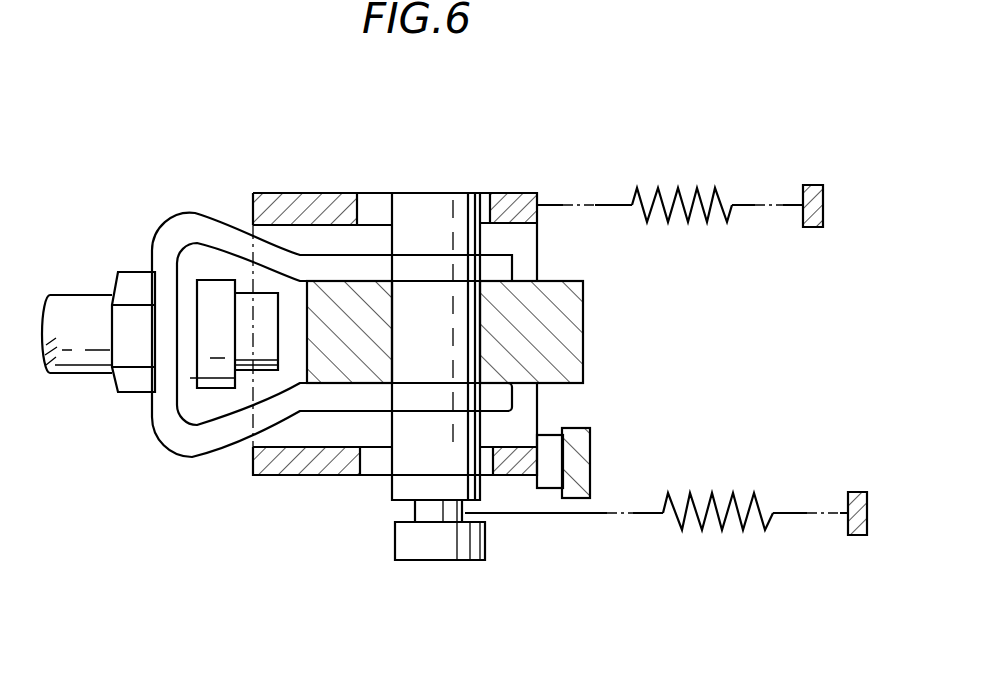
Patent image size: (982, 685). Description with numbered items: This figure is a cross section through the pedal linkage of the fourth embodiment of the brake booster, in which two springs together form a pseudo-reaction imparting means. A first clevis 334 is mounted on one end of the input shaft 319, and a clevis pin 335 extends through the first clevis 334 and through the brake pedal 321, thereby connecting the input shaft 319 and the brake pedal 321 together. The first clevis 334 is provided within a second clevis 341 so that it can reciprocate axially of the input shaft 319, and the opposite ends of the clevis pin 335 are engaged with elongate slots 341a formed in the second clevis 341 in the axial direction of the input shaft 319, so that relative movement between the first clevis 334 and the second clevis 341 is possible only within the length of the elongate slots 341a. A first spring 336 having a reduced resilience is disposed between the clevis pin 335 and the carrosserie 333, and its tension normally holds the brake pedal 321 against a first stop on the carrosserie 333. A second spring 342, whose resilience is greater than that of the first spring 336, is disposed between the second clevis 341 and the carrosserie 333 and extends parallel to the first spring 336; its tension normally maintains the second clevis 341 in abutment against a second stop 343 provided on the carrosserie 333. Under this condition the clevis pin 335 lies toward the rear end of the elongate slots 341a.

The input shaft 319 is at (83, 376).
The brake pedal 321 is at (583, 322).
The carrosserie 333 is at (807, 185).
The first clevis 334 is at (193, 457).
The clevis pin 335 is at (430, 561).
The first spring 336 is at (720, 531).
The second clevis 341 is at (366, 337).
The elongate slots 341a is at (358, 212).
The second spring 342 is at (663, 190).
The second stop 343 is at (545, 489).